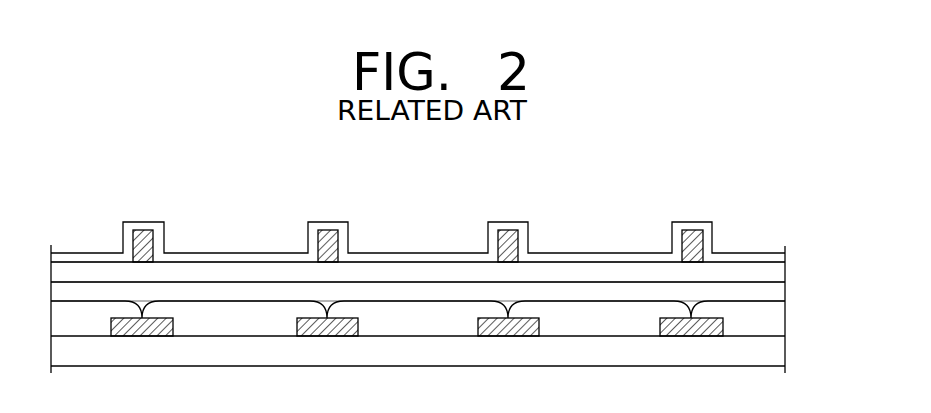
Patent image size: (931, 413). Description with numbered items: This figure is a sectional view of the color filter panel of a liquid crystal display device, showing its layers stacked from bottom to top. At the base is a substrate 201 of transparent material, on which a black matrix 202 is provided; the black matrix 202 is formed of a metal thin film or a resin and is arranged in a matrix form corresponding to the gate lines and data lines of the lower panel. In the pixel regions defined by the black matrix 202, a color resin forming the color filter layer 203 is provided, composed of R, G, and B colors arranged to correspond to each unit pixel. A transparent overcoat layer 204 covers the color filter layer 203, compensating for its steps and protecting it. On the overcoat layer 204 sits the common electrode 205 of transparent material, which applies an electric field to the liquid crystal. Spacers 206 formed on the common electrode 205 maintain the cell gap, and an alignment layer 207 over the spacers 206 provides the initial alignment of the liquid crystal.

The substrate 201 is at (782, 352).
The black matrix 202 is at (697, 337).
The color filter layer 203 is at (782, 323).
The overcoat layer 204 is at (782, 294).
The common electrode 205 is at (782, 270).
The spacer 206 is at (698, 235).
The alignment layer 207 is at (782, 257).